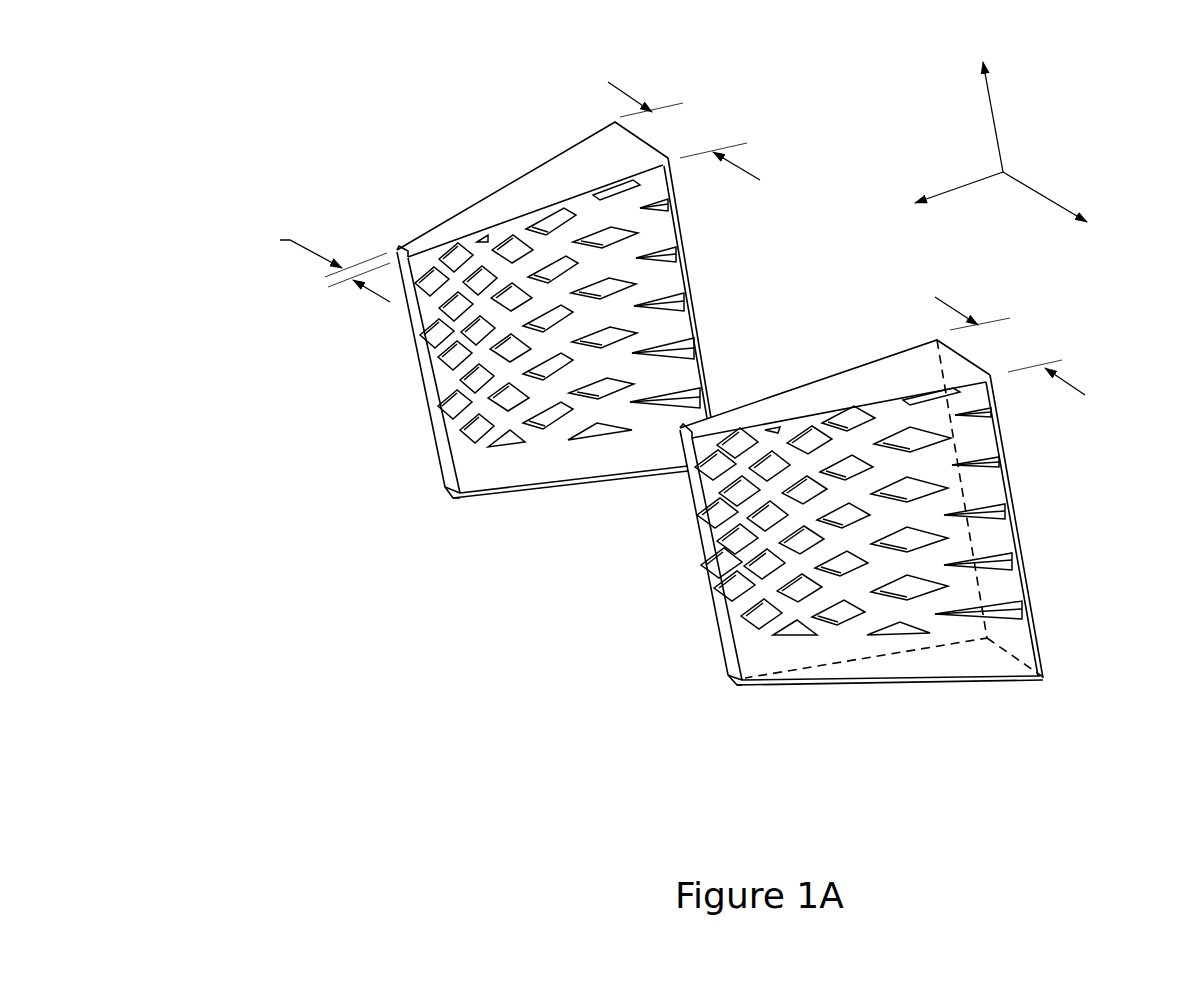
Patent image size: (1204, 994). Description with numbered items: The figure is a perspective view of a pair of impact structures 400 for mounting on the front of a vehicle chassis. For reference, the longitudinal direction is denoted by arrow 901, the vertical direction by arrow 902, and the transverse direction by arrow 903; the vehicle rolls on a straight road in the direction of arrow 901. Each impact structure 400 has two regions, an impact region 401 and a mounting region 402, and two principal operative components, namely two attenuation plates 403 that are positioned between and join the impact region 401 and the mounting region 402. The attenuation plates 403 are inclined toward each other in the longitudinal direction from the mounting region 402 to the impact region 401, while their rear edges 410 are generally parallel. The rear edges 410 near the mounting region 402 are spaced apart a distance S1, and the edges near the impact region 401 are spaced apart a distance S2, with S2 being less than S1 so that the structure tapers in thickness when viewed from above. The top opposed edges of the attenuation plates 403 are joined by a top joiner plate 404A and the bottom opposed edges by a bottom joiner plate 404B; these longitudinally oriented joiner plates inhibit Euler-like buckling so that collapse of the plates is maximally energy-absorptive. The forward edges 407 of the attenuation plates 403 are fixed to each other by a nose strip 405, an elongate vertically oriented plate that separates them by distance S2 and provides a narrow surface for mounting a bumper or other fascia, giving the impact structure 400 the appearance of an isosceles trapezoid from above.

The impact structure 400 is at (669, 421).
The impact region 401 is at (438, 438).
The mounting region 402 is at (735, 443).
The attenuation plates 403 is at (543, 413).
The top joiner plate 404A is at (525, 195).
The bottom joiner plate 404B is at (482, 500).
The nose strip 405 is at (432, 400).
The forward edges 407 is at (462, 468).
The rear edges 410 is at (1003, 418).
The longitudinal direction arrow 901 is at (936, 197).
The vertical direction arrow 902 is at (980, 100).
The transverse direction arrow 903 is at (1068, 205).
The rear edge spacing distance S1 is at (846, 238).
The forward edge spacing distance S2 is at (320, 265).